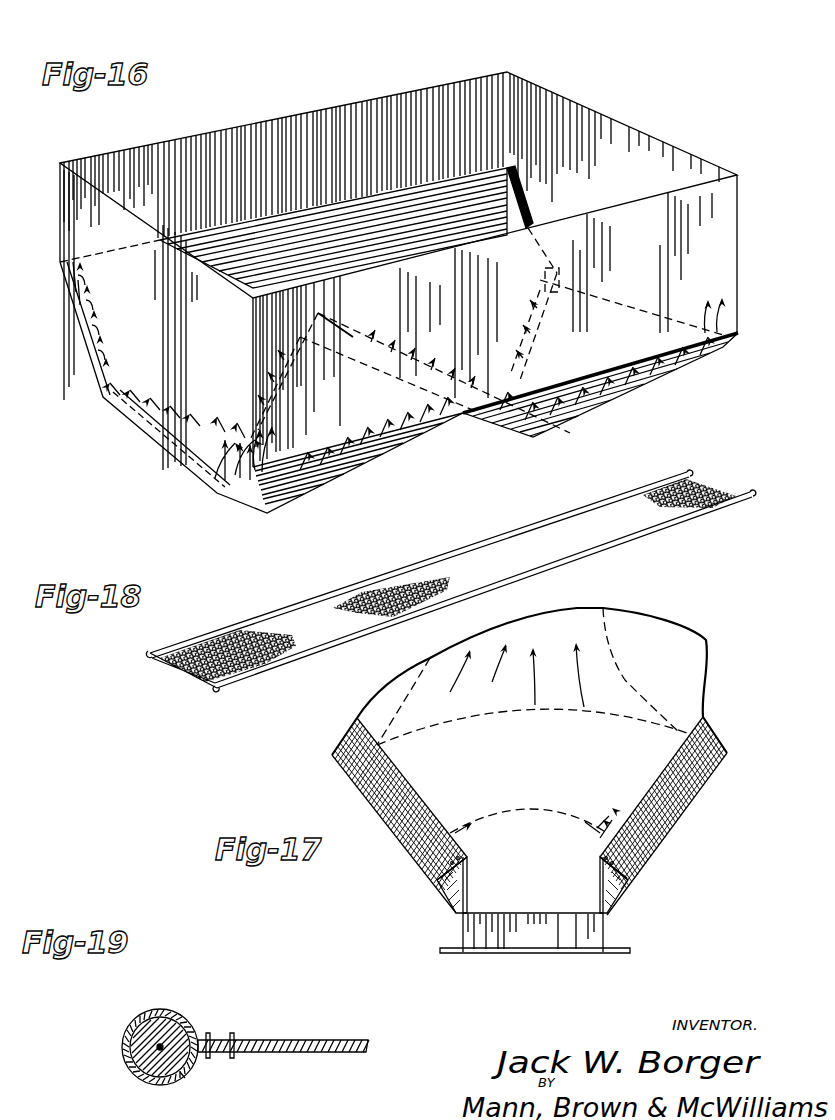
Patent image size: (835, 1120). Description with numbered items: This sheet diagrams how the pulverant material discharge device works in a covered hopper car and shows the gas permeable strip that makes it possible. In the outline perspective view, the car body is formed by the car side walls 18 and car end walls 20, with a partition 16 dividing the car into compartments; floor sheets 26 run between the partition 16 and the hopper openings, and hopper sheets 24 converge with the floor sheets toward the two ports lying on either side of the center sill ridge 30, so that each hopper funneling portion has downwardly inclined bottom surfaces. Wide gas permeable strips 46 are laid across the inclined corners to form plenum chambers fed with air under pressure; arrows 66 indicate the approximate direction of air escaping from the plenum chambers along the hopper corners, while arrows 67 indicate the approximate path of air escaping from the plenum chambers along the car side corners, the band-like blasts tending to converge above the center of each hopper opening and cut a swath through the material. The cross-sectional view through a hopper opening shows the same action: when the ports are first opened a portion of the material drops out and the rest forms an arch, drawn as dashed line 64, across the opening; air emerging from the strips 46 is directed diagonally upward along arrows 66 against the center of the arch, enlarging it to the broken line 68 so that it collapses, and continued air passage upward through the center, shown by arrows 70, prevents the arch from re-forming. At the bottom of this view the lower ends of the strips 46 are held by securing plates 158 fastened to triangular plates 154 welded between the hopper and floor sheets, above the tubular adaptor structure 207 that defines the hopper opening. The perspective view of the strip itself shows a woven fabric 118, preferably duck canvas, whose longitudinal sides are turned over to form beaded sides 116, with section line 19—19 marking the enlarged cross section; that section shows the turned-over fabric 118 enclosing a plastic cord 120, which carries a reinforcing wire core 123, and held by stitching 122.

In FIG. 16, the partition 16 is at (352, 118).
In FIG. 16, the car side walls 18 is at (150, 192).
In FIG. 16, the car end walls 20 is at (717, 212).
In FIG. 16, the hopper sheets 24 is at (598, 322).
In FIG. 16, the floor sheets 26 is at (388, 217).
In FIG. 16, the center sill ridge 30 is at (358, 328).
In FIG. 16, the air flow arrows 66 is at (515, 328).
In FIG. 17, the air flow arrows 66 is at (460, 830).
In FIG. 16, the air path arrows 67 is at (515, 205).
In FIG. 18, the beaded sides 116 is at (408, 577).
In FIG. 18, the woven fabric 118 is at (482, 568).
In FIG. 19, the woven fabric 118 is at (298, 1040).
In FIG. 18, the section line 19— 19 is at (267, 604).
In FIG. 17, the gas permeable strips 46 is at (408, 785).
In FIG. 17, the arch 64 is at (540, 810).
In FIG. 17, the enlarged arch 68 is at (592, 715).
In FIG. 17, the upward air flow arrows 70 is at (575, 680).
In FIG. 17, the triangular plates 154 is at (447, 895).
In FIG. 17, the securing plates 158 is at (430, 868).
In FIG. 17, the tubular adaptor structure 207 is at (614, 932).
In FIG. 19, the cord 120 is at (160, 1020).
In FIG. 19, the stitching 122 is at (212, 1033).
In FIG. 19, the bore 123 is at (183, 1075).